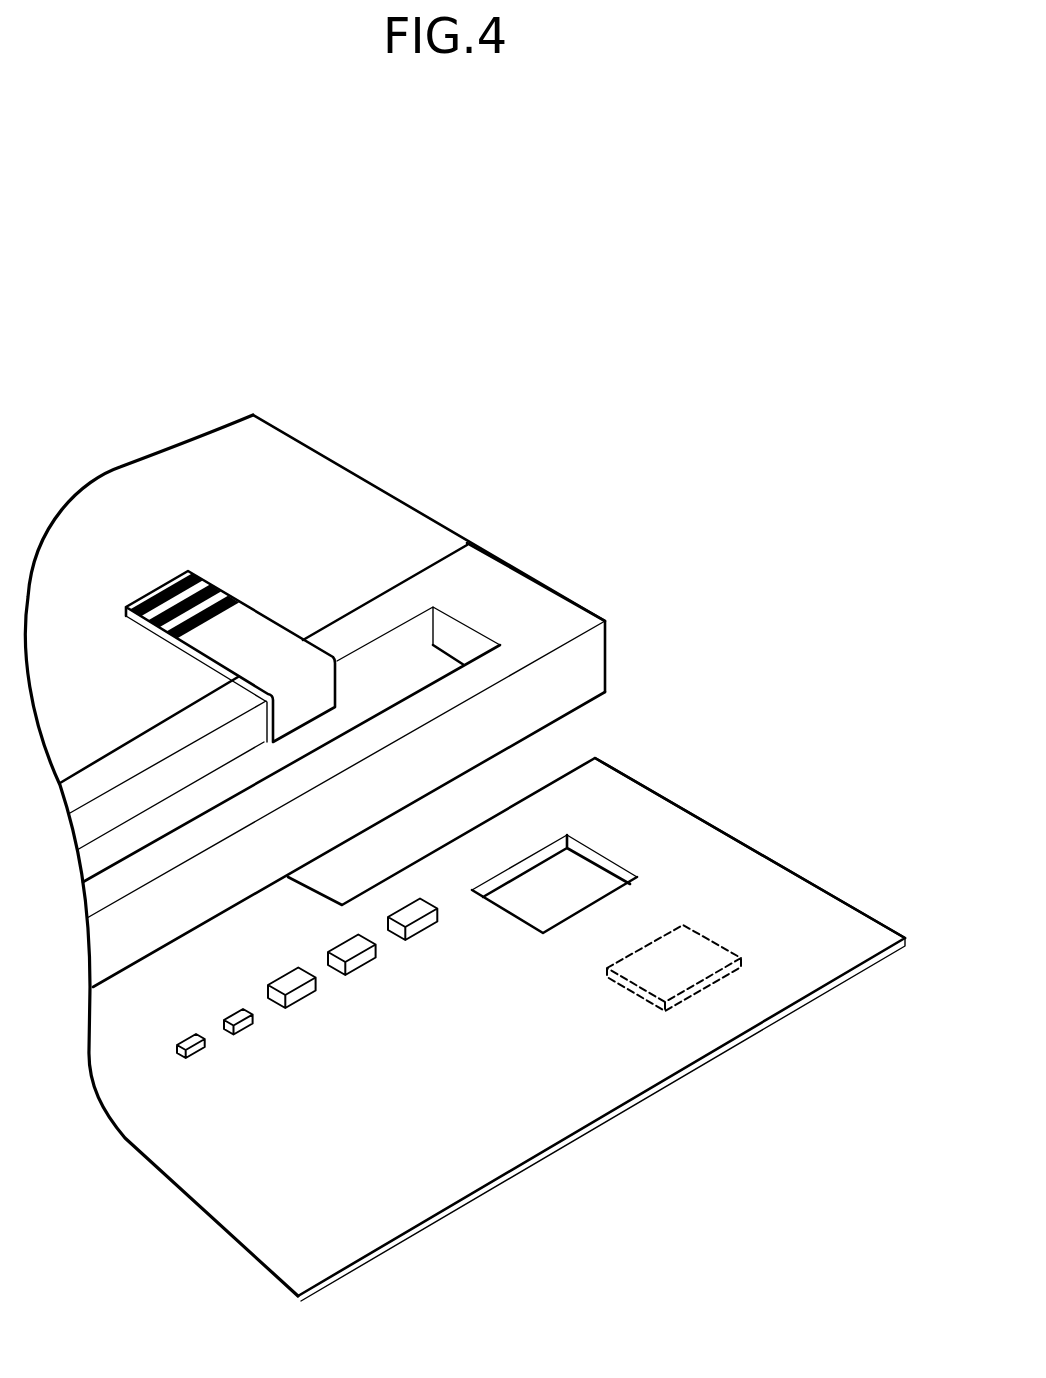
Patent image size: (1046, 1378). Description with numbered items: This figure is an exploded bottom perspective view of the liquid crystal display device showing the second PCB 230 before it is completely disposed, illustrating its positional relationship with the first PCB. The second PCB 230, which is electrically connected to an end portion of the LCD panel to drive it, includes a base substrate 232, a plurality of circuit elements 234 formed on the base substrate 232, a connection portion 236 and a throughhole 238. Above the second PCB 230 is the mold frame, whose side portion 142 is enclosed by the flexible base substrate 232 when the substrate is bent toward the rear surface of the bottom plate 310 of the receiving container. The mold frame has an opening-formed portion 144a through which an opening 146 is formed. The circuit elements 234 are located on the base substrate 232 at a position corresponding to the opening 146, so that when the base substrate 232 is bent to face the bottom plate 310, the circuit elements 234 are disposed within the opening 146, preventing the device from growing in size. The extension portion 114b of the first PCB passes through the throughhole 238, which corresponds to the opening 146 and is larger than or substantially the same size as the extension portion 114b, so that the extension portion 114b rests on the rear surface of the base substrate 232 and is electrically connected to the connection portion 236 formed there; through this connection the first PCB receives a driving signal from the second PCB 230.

The extension portion 114b is at (250, 612).
The bottom plate 310 is at (412, 526).
The opening 146 is at (423, 671).
The opening-formed portion 144a is at (540, 594).
The side portion 142 is at (379, 701).
The second PCB 230 is at (871, 817).
The circuit element 234 is at (405, 907).
The throughhole 238 is at (566, 886).
The base substrate 232 is at (741, 863).
The connection portion 236 is at (711, 955).